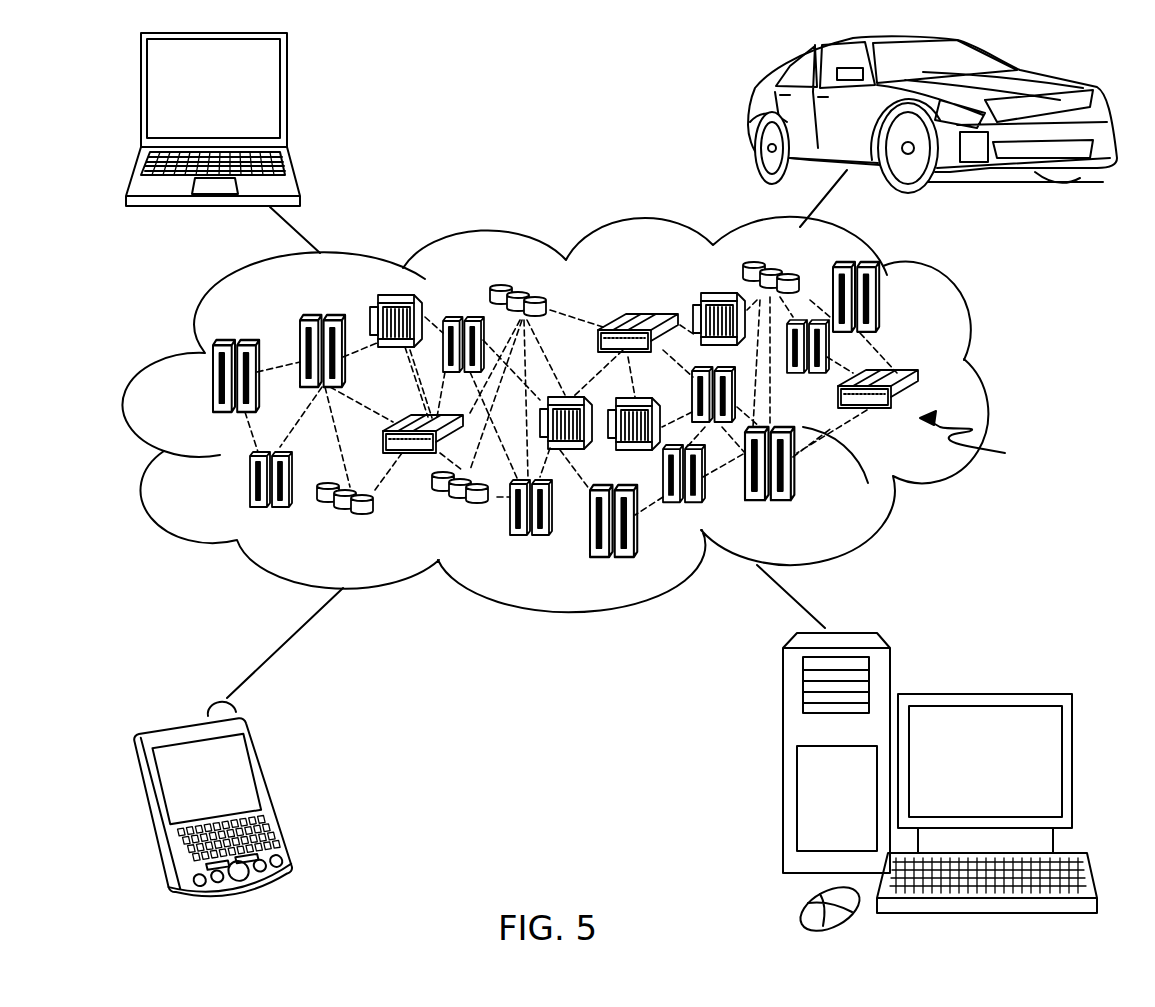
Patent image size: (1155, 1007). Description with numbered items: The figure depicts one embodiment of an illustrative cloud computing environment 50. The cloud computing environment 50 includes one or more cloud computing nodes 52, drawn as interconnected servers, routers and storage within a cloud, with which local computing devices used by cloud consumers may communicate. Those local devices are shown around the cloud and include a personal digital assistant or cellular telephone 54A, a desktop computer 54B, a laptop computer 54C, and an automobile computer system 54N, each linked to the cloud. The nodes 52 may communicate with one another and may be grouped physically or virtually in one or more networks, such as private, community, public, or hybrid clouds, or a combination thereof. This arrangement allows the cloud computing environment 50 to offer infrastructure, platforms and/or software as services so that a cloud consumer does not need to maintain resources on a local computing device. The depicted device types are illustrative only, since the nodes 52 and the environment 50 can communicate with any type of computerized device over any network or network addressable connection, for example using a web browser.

The cloud computing environment 50 is at (983, 385).
The cloud computing nodes 52 is at (978, 441).
The personal digital assistant (PDA) or cellular telephone 54A is at (273, 788).
The desktop computer 54B is at (982, 692).
The laptop computer 54C is at (287, 98).
The automobile computer system 54N is at (750, 111).